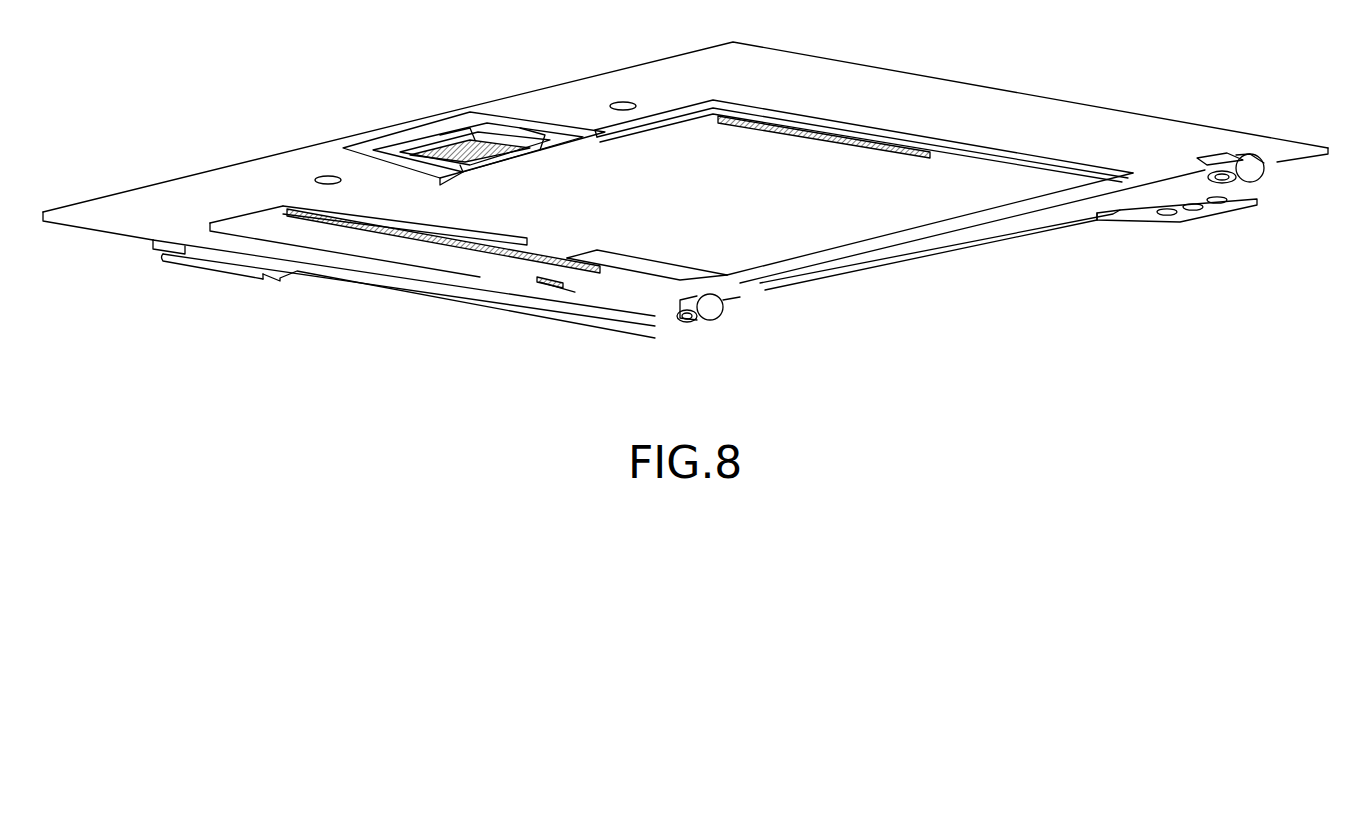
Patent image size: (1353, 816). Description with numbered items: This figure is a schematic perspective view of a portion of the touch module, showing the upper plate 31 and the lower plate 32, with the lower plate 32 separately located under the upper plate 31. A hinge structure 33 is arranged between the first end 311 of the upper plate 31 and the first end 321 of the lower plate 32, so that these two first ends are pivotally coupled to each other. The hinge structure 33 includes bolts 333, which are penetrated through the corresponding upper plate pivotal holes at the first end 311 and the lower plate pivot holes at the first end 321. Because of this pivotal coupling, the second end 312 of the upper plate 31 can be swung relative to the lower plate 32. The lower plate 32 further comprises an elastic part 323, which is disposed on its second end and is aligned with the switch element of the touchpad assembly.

The second end of the upper plate 312 is at (621, 82).
The first end of the upper plate 311 is at (922, 232).
The first end of the lower plate 321 is at (977, 238).
The upper plate 31 is at (398, 280).
The lower plate 32 is at (478, 306).
The hinge structure 33 is at (712, 318).
The bolts 333 is at (675, 320).
The elastic part 323 is at (503, 155).